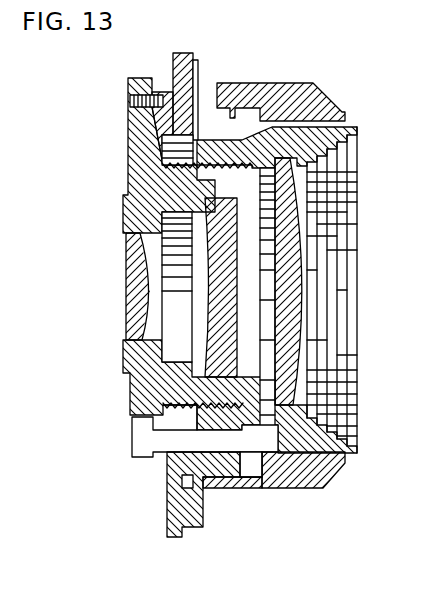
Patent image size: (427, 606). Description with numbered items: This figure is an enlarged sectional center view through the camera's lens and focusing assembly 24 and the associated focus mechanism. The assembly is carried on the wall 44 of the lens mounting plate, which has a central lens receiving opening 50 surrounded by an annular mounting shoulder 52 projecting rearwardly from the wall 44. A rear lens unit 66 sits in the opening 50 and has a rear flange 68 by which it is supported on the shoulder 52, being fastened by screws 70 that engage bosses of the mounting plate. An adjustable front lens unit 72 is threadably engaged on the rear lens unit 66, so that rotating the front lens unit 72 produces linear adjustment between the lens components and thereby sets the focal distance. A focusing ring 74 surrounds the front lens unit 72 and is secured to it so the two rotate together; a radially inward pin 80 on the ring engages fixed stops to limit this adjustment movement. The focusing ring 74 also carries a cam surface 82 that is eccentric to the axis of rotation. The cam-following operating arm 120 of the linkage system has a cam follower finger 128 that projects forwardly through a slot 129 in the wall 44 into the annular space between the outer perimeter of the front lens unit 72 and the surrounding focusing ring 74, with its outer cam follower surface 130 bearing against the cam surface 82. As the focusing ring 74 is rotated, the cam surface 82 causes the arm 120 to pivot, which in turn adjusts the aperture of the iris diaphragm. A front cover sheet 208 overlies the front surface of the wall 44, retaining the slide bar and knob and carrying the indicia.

The lens and focusing assembly 24 is at (350, 468).
The wall section 44 is at (186, 54).
The central lens receiving opening 50 is at (176, 426).
The annular mounting shoulder 52 is at (151, 123).
The rear lens unit 66 is at (130, 391).
The rear flange 68 is at (132, 135).
The screws 70 is at (126, 98).
The adjustable front lens unit 72 is at (361, 120).
The focusing ring 74 is at (318, 86).
The pin 80 is at (248, 109).
The cam surface 82 is at (263, 460).
The cam-following operating arm 120 is at (164, 522).
The cam follower finger 128 is at (239, 478).
The slot 129 is at (194, 486).
The cam follower surface 130 is at (219, 484).
The front cover sheet 208 is at (198, 74).